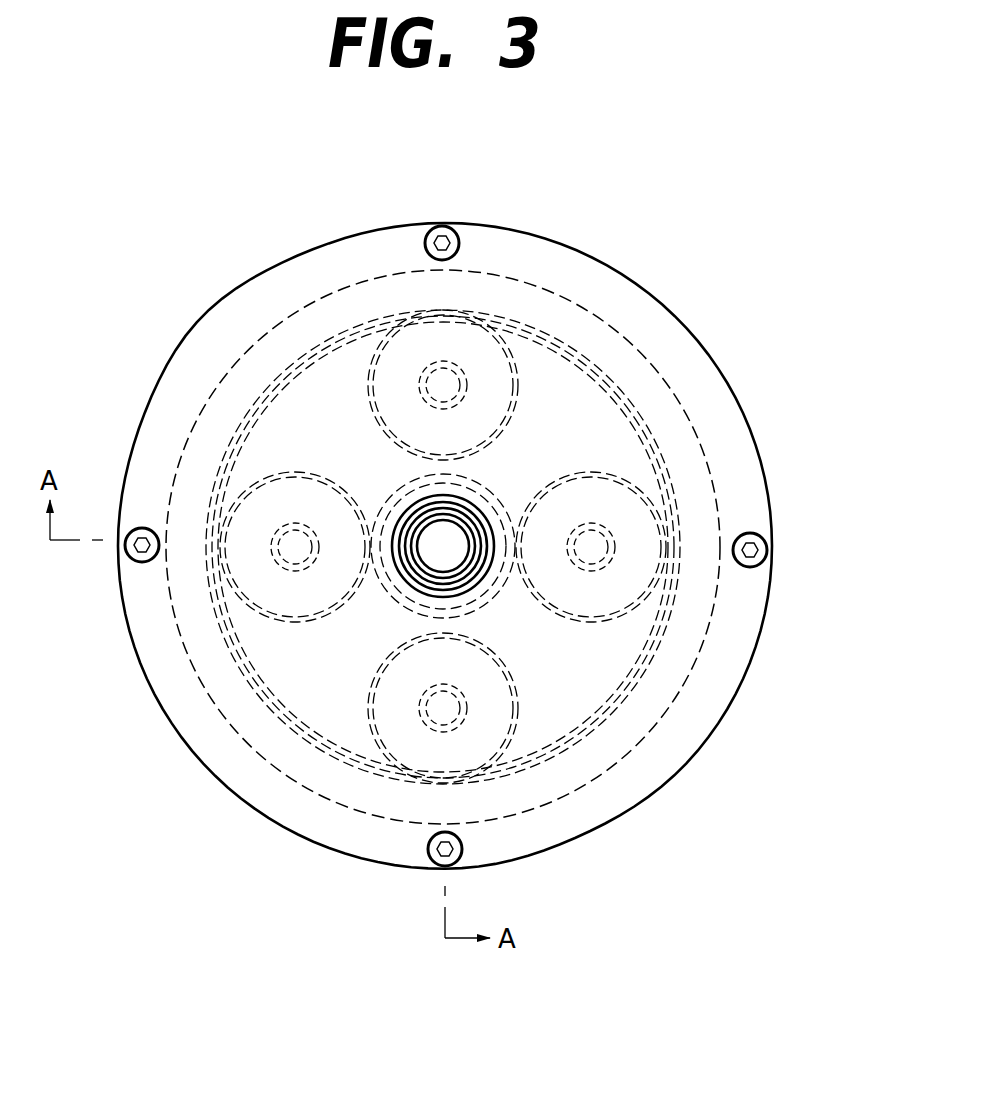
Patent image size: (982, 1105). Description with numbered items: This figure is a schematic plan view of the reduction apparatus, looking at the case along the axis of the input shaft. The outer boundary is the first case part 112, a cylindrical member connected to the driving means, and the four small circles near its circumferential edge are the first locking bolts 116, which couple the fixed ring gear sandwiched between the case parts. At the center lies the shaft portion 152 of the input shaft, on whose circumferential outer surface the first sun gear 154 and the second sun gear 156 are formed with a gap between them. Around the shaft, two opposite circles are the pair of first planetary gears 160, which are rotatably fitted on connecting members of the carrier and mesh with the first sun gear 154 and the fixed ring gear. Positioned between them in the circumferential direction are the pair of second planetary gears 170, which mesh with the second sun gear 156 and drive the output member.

The first case part 112 is at (288, 280).
The first locking bolts 116 is at (442, 243).
The shaft portion 152 is at (443, 546).
The first sun gear 154 is at (390, 494).
The second sun gear 156 is at (406, 468).
The first planetary gears 160 is at (463, 571).
The second planetary gears 170 is at (476, 569).